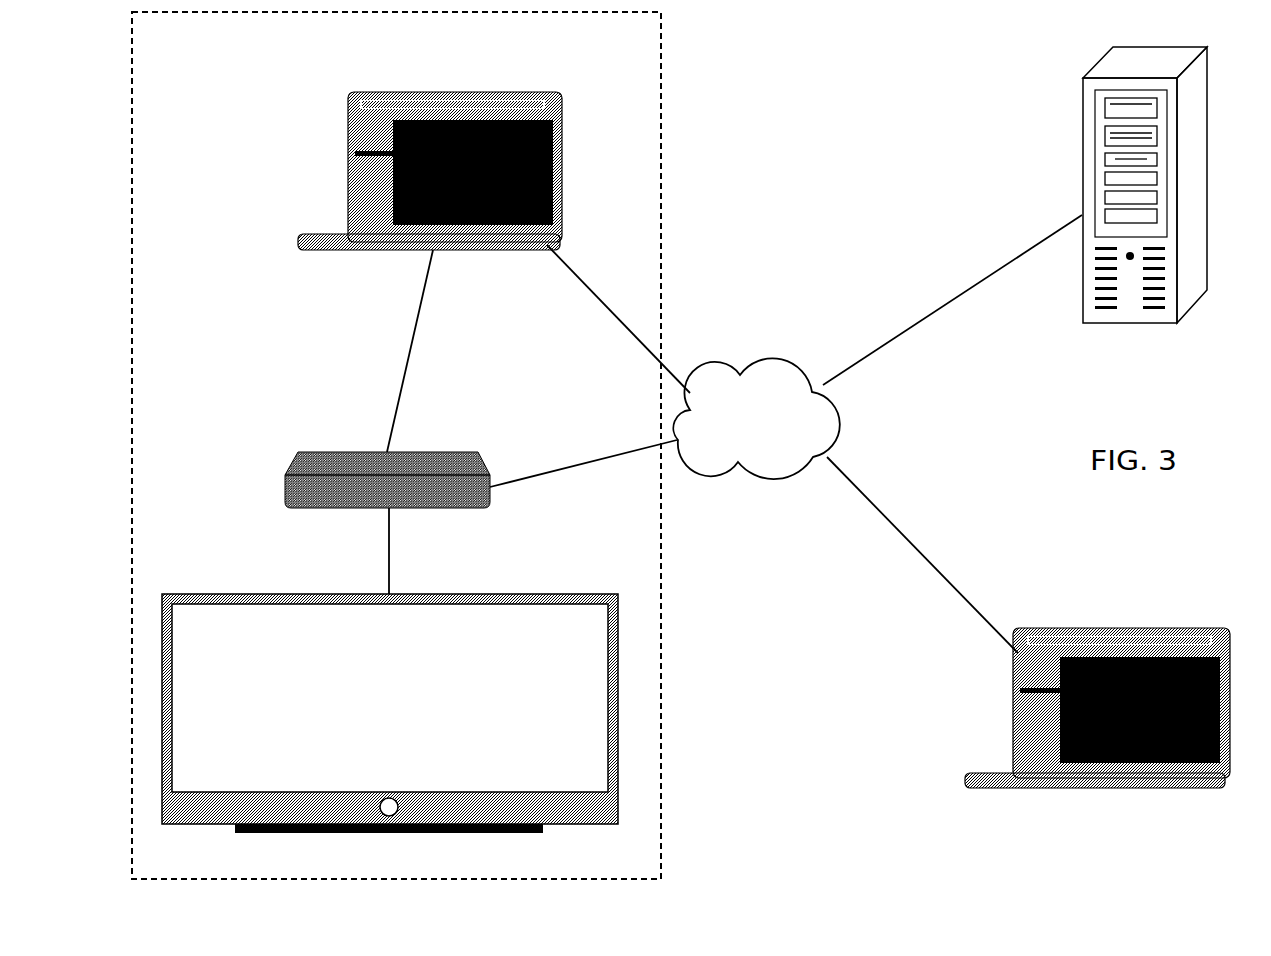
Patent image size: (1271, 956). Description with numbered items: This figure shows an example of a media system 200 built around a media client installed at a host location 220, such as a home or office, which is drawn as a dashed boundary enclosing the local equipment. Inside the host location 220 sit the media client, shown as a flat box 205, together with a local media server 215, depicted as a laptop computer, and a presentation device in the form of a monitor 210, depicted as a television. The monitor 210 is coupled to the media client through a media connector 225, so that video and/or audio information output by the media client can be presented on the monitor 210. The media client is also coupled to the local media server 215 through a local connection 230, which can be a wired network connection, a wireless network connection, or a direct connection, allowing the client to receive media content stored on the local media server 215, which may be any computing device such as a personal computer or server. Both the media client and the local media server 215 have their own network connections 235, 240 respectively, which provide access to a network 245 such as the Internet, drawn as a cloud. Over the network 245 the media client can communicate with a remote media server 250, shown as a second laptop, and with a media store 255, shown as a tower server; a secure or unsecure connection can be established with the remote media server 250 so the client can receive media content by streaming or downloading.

The media system 200 is at (789, 155).
The media device / set-top box 205 is at (290, 465).
The monitor 210 is at (487, 594).
The local media server 215 is at (348, 115).
The host location 220 is at (662, 272).
The media connector 225 is at (392, 578).
The local connection 230 is at (411, 353).
The network connection 235 is at (590, 461).
The network connection 240 is at (575, 272).
The network 245 is at (760, 358).
The remote media server 250 is at (965, 783).
The media store 255 is at (1083, 93).